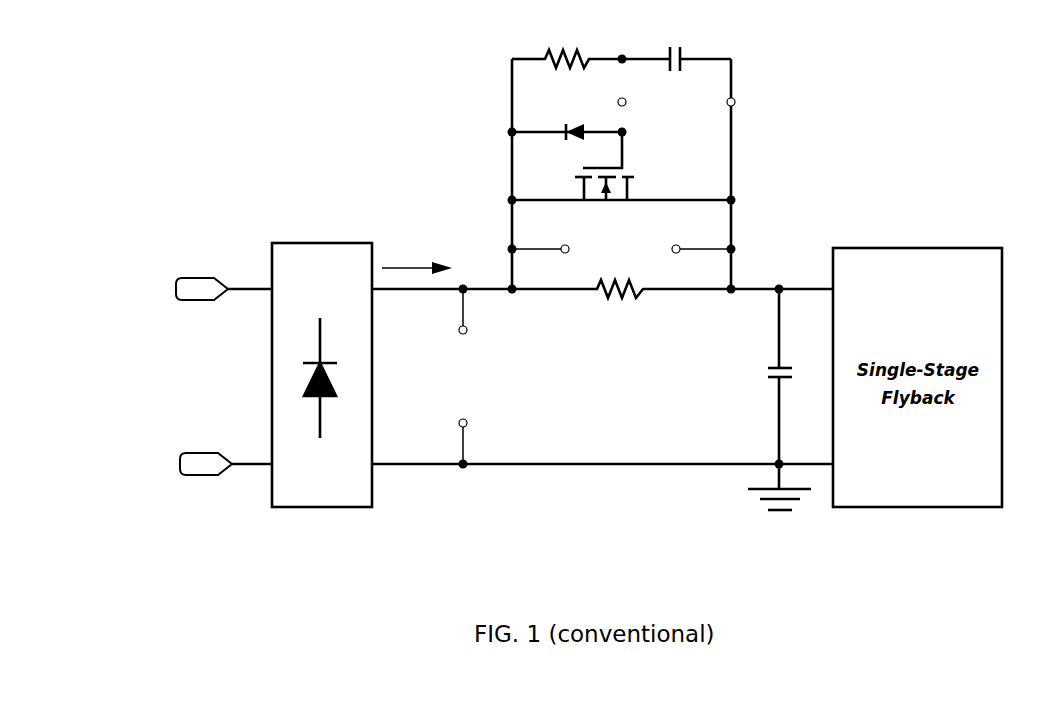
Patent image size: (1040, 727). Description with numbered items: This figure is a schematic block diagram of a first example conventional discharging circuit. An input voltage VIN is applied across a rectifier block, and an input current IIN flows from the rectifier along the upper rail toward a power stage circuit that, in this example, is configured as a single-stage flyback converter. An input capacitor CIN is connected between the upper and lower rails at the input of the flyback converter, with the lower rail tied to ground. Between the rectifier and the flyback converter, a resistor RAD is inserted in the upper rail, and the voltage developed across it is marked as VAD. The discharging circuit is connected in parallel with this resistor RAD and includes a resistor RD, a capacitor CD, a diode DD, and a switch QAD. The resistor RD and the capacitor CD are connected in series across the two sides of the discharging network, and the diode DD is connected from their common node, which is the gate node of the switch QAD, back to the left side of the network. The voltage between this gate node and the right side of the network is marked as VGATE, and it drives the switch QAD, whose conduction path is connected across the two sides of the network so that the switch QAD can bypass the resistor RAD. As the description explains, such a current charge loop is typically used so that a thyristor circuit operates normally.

The resistor RD is at (566, 47).
The capacitor CD is at (672, 48).
The diode DD is at (567, 122).
The switch QAD is at (604, 181).
The active damping resistor RAD is at (618, 306).
The input capacitor CIN is at (761, 376).
The input voltage VIN is at (463, 376).
The active damping voltage VAD is at (621, 249).
The gate voltage VGATE is at (676, 103).
The input current IIN is at (417, 259).